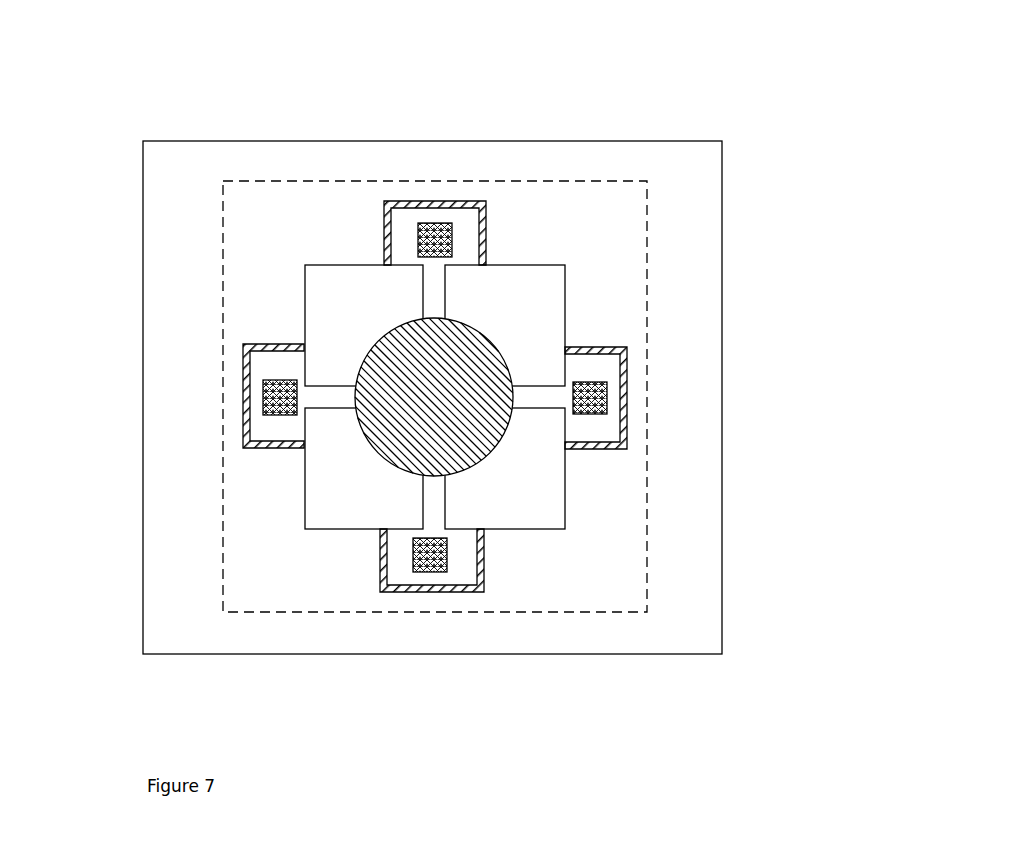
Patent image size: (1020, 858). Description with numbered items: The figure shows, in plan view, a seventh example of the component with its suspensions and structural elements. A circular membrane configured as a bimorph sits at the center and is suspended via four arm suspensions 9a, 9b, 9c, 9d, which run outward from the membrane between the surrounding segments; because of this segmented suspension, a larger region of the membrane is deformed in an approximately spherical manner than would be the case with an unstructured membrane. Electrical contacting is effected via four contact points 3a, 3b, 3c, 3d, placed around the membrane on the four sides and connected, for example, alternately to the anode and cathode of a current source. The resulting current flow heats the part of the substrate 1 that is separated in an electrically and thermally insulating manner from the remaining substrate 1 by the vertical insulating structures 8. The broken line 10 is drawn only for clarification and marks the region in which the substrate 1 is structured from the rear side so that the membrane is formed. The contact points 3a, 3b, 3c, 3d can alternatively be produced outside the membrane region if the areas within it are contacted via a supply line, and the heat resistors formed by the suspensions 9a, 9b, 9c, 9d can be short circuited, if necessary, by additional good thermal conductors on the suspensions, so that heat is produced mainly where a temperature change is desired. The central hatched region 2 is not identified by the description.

The substrate 1 is at (180, 160).
The magnet 2 is at (473, 363).
The contact point 3a is at (267, 397).
The contact point 3b is at (607, 400).
The contact point 3c is at (437, 253).
The contact point 3d is at (430, 565).
The vertical insulating structures 8 is at (582, 345).
The arm suspension 9a is at (333, 395).
The arm suspension 9b is at (540, 398).
The arm suspension 9c is at (430, 318).
The arm suspension 9d is at (435, 490).
The broken line 10 is at (222, 590).